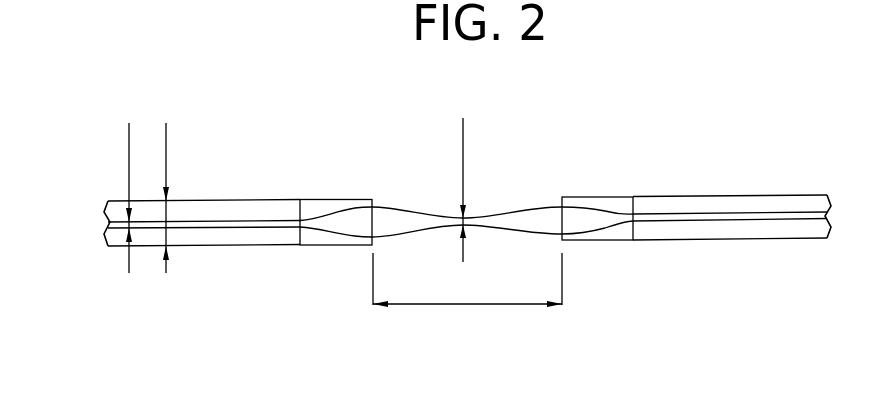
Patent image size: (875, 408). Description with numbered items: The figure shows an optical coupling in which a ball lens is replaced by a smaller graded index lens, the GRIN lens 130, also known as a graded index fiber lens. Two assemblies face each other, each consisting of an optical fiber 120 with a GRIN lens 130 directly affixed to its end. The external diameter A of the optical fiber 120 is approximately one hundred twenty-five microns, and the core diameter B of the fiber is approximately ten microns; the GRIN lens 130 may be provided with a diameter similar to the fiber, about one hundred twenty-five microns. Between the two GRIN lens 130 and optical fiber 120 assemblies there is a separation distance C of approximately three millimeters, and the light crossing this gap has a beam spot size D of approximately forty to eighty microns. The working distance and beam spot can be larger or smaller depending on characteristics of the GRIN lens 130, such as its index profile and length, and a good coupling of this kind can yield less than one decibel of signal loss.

The optical fiber 120 is at (243, 248).
The GRIN lens 130 is at (319, 248).
The external diameter A is at (165, 184).
The core diameter B is at (127, 184).
The separation distance C is at (467, 294).
The beam spot size D is at (462, 174).